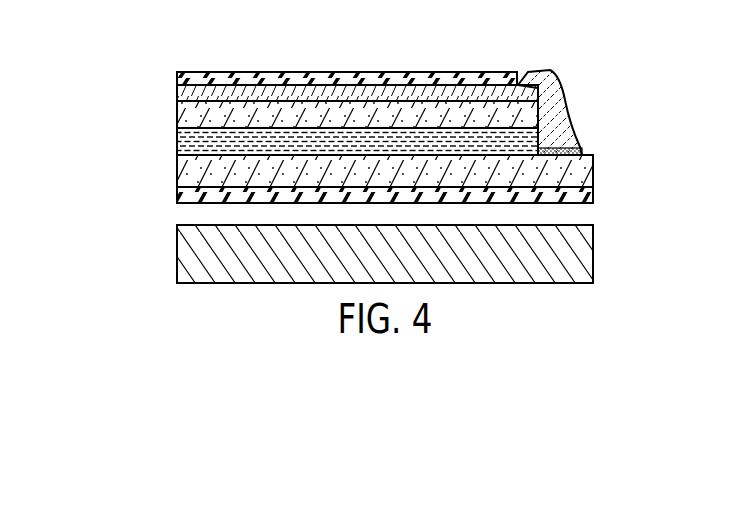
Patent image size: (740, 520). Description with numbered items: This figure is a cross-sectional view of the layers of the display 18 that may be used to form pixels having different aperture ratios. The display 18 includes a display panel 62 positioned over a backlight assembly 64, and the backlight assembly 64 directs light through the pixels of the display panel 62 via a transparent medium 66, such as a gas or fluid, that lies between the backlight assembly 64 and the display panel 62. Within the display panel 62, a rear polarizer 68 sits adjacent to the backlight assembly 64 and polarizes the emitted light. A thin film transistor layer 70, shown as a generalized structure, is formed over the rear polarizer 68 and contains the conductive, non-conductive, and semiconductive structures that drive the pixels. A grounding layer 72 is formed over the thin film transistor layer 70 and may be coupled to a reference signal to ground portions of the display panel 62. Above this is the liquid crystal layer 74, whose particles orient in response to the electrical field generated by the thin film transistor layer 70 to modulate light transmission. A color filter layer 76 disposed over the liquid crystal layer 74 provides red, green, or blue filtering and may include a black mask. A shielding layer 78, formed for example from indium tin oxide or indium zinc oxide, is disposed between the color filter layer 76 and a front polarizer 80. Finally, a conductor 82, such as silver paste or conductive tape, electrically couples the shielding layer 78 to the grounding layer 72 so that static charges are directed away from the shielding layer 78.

The display 18 is at (168, 29).
The display panel 62 is at (103, 135).
The backlight assembly 64 is at (178, 247).
The transparent medium 66 is at (178, 215).
The rear polarizer 68 is at (596, 190).
The thin film transistor layer 70 is at (596, 172).
The grounding layer 72 is at (552, 127).
The liquid crystal layer 74 is at (177, 145).
The color filter layer 76 is at (177, 113).
The shielding layer 78 is at (177, 91).
The front polarizer 80 is at (337, 72).
The conductor 82 is at (555, 92).